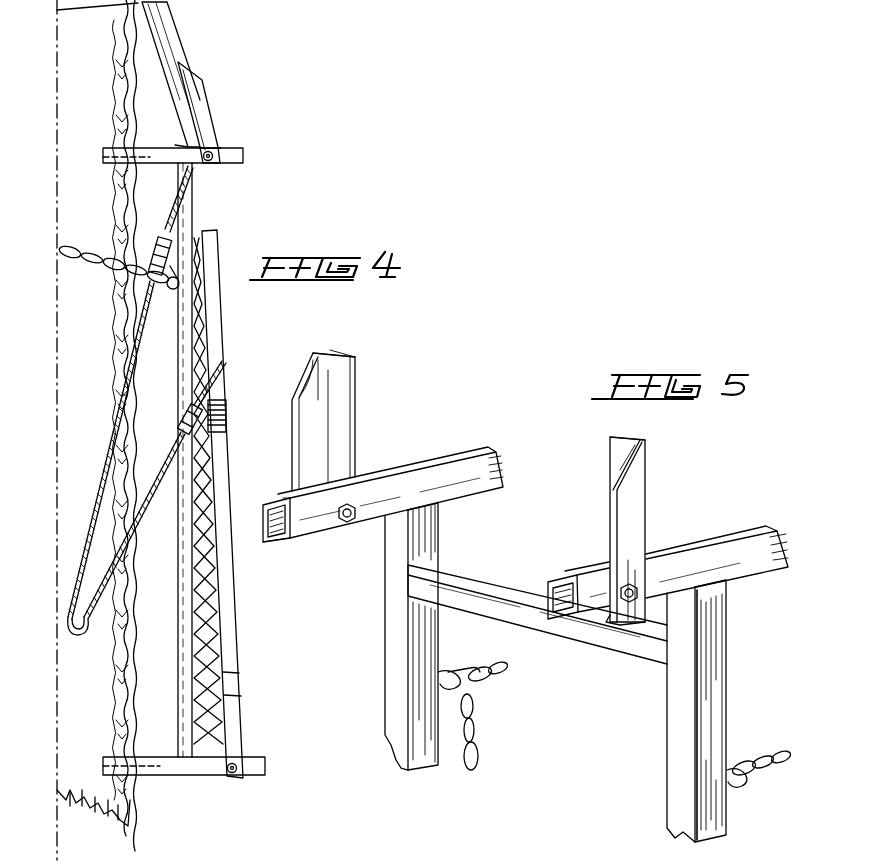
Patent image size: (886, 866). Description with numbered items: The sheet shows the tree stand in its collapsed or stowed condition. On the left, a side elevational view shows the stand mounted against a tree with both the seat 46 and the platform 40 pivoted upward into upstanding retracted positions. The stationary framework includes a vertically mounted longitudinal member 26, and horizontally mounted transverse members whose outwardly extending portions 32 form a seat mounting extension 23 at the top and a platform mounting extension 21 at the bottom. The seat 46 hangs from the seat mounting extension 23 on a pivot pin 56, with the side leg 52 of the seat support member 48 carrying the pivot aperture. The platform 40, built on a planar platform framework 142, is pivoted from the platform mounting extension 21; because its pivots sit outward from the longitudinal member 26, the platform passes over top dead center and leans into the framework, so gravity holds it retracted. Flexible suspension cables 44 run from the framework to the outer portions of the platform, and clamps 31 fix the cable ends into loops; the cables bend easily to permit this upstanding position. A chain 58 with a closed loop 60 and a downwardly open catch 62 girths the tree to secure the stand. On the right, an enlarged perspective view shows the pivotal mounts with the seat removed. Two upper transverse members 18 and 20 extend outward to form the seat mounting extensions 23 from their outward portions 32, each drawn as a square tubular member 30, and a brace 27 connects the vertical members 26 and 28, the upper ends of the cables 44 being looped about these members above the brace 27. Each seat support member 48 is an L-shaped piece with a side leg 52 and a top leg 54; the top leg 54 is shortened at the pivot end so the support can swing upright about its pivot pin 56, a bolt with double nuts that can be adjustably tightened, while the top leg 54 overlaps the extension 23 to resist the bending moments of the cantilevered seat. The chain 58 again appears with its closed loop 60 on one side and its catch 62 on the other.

In FIG. 5, the transverse member 18 is at (432, 457).
In FIG. 5, the transverse member 20 is at (721, 537).
In FIG. 4, the platform mounting extension 21 is at (202, 766).
In FIG. 4, the seat mounting extension 23 is at (243, 157).
In FIG. 5, the seat mounting extension 23 is at (300, 535).
In FIG. 4, the longitudinal member 26 is at (183, 628).
In FIG. 5, the longitudinal member 26 is at (385, 625).
In FIG. 5, the brace 27 is at (490, 578).
In FIG. 5, the vertical member 28 is at (712, 700).
In FIG. 5, the tubular member 30 is at (477, 446).
In FIG. 4, the clamp 31 is at (165, 235).
In FIG. 4, the outwardly extending portion 32 is at (237, 169).
In FIG. 5, the outwardly extending portion 32 is at (283, 498).
In FIG. 4, the platform 40 is at (198, 233).
In FIG. 4, the suspension cable 44 is at (148, 508).
In FIG. 4, the seat 46 is at (160, 48).
In FIG. 5, the seat support member 48 is at (364, 355).
In FIG. 4, the side leg 52 is at (203, 103).
In FIG. 5, the side leg 52 is at (310, 386).
In FIG. 5, the top leg 54 is at (342, 392).
In FIG. 4, the pivot pin 56 is at (216, 146).
In FIG. 5, the pivot pin 56 is at (353, 505).
In FIG. 4, the chain 58 is at (82, 266).
In FIG. 5, the chain 58 is at (496, 690).
In FIG. 4, the closed loop 60 is at (178, 290).
In FIG. 5, the closed loop 60 is at (742, 783).
In FIG. 4, the catch 62 is at (168, 290).
In FIG. 5, the catch 62 is at (452, 672).
In FIG. 4, the platform framework 142 is at (237, 630).